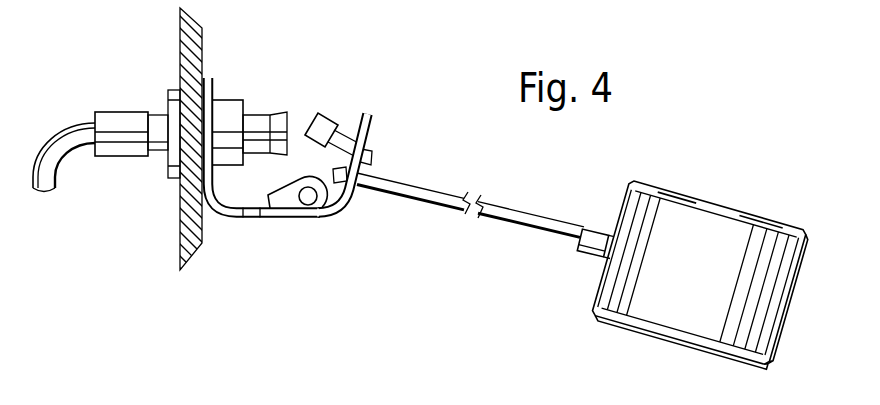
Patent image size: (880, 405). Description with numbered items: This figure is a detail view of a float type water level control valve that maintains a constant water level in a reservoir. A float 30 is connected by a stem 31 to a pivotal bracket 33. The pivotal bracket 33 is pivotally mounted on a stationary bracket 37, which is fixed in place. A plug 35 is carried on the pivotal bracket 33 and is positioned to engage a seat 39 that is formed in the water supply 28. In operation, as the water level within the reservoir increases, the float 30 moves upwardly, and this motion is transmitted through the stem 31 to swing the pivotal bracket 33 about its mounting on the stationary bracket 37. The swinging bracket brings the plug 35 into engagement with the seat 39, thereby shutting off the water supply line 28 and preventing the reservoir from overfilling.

The water supply 28 is at (75, 123).
The float 30 is at (733, 237).
The stem 31 is at (557, 232).
The pivotal bracket 33 is at (368, 140).
The plug 35 is at (335, 122).
The stationary bracket 37 is at (286, 214).
The seat 39 is at (258, 124).